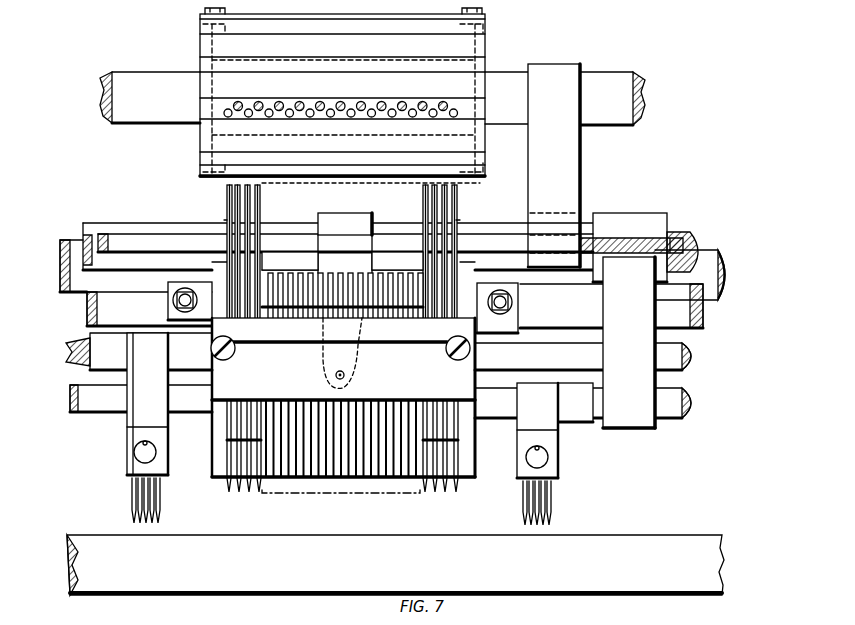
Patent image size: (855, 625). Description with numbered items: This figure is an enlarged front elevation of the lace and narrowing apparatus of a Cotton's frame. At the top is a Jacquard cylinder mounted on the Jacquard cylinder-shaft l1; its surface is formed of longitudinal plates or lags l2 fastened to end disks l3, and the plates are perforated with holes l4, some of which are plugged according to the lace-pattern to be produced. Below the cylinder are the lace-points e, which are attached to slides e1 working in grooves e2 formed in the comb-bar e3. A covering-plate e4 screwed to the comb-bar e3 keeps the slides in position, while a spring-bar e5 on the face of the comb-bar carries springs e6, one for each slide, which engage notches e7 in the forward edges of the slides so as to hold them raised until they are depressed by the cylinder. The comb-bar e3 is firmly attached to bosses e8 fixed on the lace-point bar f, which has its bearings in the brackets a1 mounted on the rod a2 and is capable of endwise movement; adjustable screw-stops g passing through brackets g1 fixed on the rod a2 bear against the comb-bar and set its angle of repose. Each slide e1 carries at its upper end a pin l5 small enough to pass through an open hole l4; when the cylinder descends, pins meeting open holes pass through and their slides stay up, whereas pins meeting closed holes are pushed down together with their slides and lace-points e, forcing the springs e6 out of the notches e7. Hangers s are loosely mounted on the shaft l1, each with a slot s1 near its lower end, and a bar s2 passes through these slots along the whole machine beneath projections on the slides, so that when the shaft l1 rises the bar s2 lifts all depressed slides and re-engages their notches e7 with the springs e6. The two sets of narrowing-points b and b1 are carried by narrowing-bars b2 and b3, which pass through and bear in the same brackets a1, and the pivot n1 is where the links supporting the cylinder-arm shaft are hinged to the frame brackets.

The Jacquard cylinder-shaft l1 is at (372, 98).
The longitudinal plates or lags l2 is at (342, 92).
The end disks l3 is at (203, 170).
The holes l4 is at (372, 104).
The pins l5 is at (260, 205).
The hangers s is at (554, 165).
The slot s1 is at (528, 222).
The bar s2 is at (390, 243).
The brackets a1 is at (629, 342).
The rod a2 is at (404, 249).
The lace-point bar f is at (395, 306).
The lace-points e is at (240, 492).
The slides e1 is at (480, 432).
The grooves e2 is at (265, 420).
The comb-bar e3 is at (340, 337).
The covering-plate e4 is at (343, 397).
The spring-bar e5 is at (342, 354).
The springs e6 is at (476, 288).
The notches e7 is at (347, 260).
The bosses e8 is at (344, 302).
The adjustable screw-stops g is at (336, 377).
The brackets g1 is at (345, 243).
The narrowing-points b is at (140, 428).
The narrowing-points b1 is at (555, 454).
The narrowing-bar b2 is at (378, 351).
The narrowing-bar b3 is at (380, 401).
The pivot n1 is at (395, 565).